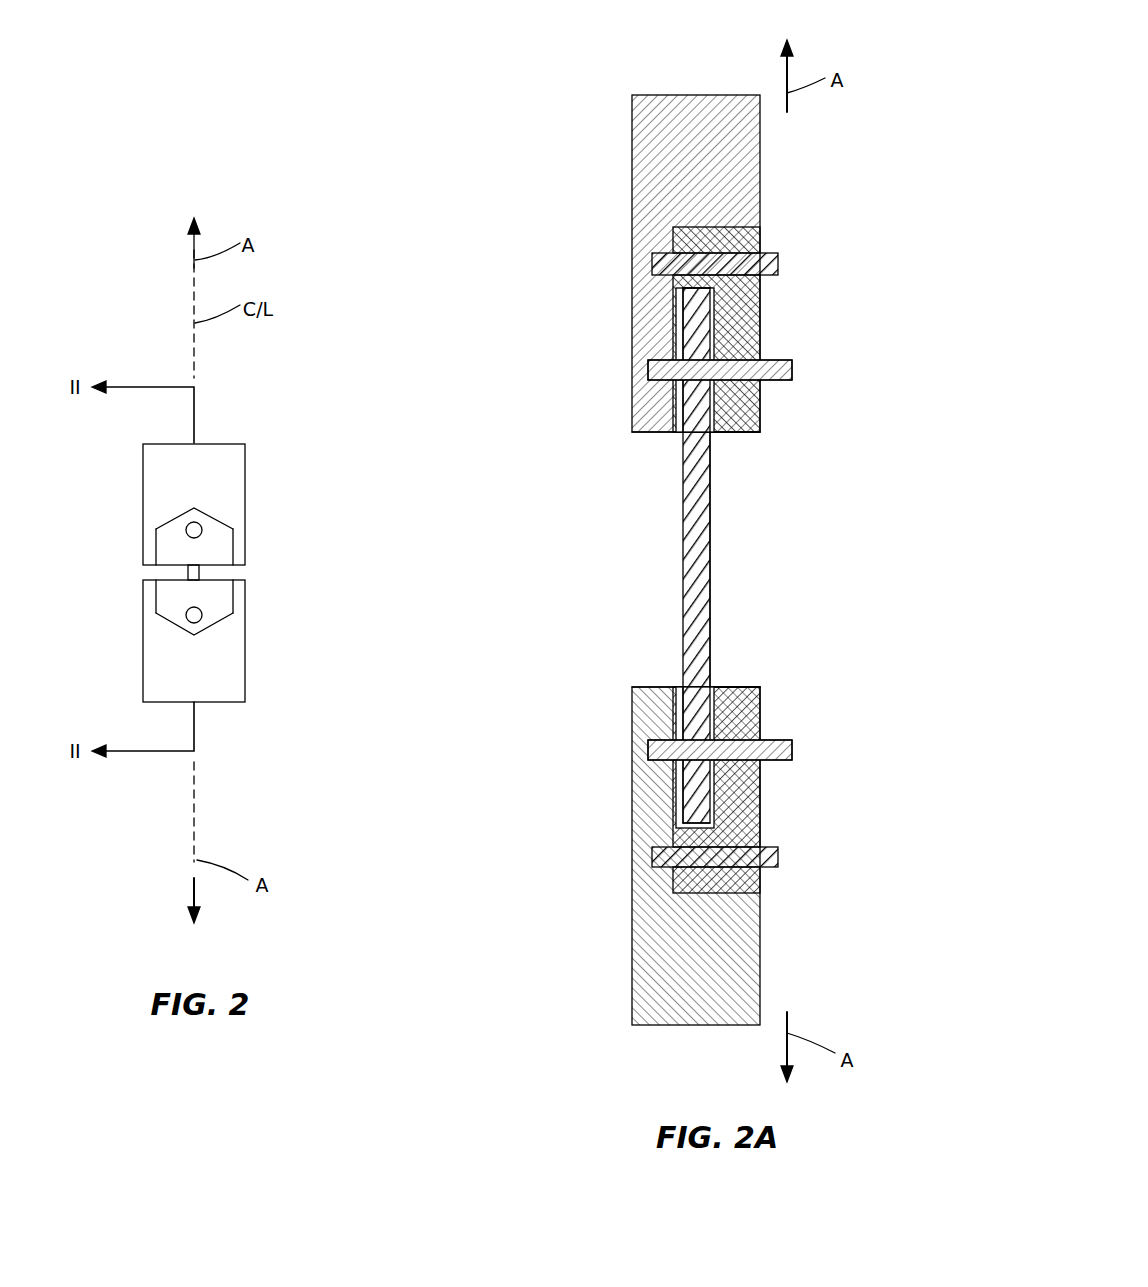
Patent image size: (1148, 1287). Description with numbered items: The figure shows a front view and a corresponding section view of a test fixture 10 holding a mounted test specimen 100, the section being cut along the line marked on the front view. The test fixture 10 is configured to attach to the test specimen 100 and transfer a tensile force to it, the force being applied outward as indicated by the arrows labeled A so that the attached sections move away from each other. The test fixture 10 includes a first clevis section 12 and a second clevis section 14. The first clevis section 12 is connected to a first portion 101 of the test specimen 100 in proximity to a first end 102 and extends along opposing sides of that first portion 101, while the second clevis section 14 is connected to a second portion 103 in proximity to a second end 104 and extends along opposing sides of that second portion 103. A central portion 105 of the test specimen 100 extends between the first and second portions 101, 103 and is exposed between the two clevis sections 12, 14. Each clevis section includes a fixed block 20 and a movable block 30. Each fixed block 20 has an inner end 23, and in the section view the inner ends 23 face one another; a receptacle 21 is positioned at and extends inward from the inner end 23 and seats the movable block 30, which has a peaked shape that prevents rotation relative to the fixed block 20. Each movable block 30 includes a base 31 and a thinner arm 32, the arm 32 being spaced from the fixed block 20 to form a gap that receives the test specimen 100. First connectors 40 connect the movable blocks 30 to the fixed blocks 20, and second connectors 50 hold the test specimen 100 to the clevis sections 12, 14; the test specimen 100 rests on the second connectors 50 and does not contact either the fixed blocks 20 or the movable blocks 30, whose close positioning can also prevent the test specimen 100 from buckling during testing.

In FIG. 2, the test fixture 10 is at (364, 404).
In FIG. 2A, the test fixture 10 is at (880, 124).
In FIG. 2, the first clevis section 12 is at (272, 468).
In FIG. 2A, the first clevis section 12 is at (586, 131).
In FIG. 2, the second clevis section 14 is at (272, 687).
In FIG. 2A, the second clevis section 14 is at (598, 982).
In FIG. 2, the fixed block 20 is at (143, 509).
In FIG. 2A, the fixed block 20 is at (650, 203).
In FIG. 2A, the receptacle 21 is at (682, 400).
In FIG. 2A, the inner end 23 is at (650, 432).
In FIG. 2, the movable block 30 is at (215, 538).
In FIG. 2A, the movable block 30 is at (750, 325).
In FIG. 2A, the base 31 is at (732, 223).
In FIG. 2A, the arm 32 is at (750, 432).
In FIG. 2, the first connector 40 is at (201, 528).
In FIG. 2A, the first connector 40 is at (782, 250).
In FIG. 2, the second connector 50 is at (194, 557).
In FIG. 2A, the second connector 50 is at (785, 365).
In FIG. 2, the test specimen 100 is at (198, 577).
In FIG. 2A, the test specimen 100 is at (683, 547).
In FIG. 2A, the first portion 101 is at (682, 337).
In FIG. 2A, the first end 102 is at (682, 288).
In FIG. 2A, the second portion 103 is at (680, 790).
In FIG. 2A, the second end 104 is at (677, 850).
In FIG. 2A, the central portion 105 is at (709, 570).